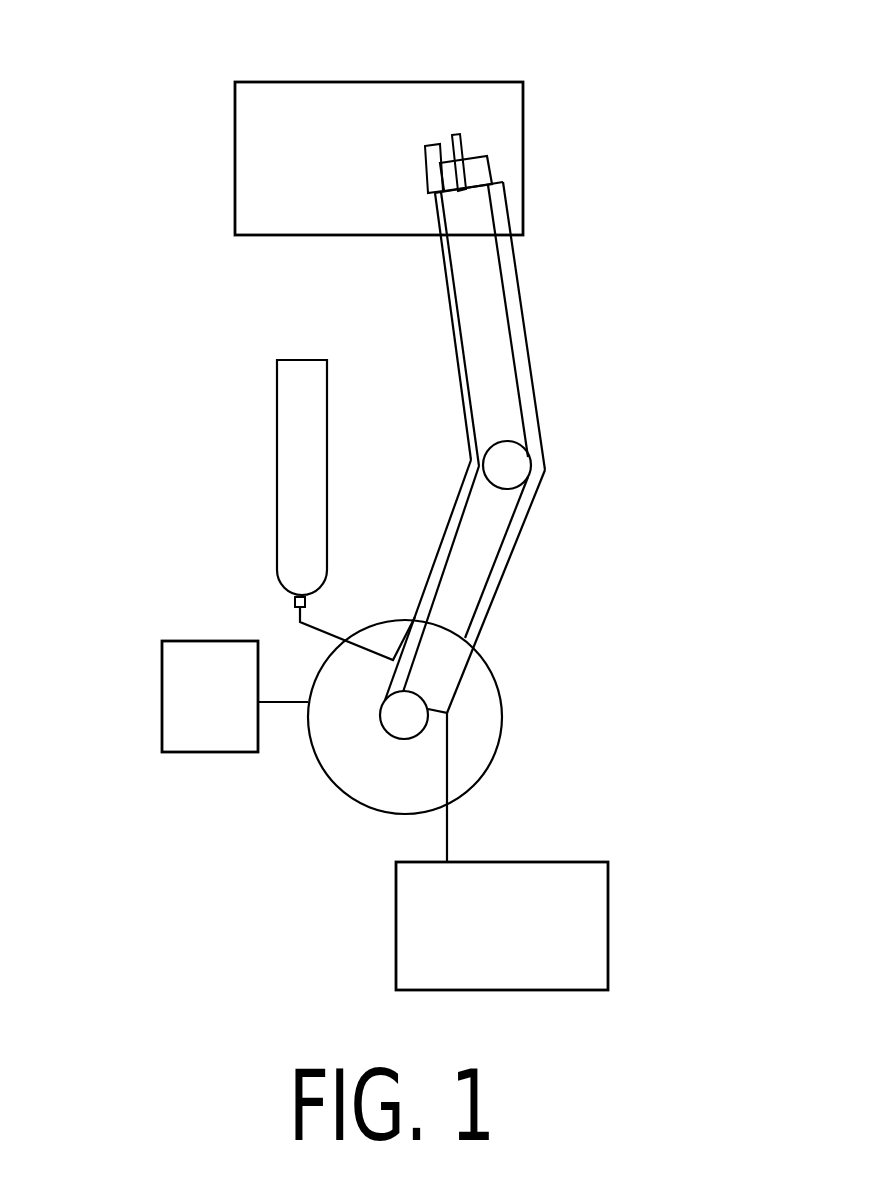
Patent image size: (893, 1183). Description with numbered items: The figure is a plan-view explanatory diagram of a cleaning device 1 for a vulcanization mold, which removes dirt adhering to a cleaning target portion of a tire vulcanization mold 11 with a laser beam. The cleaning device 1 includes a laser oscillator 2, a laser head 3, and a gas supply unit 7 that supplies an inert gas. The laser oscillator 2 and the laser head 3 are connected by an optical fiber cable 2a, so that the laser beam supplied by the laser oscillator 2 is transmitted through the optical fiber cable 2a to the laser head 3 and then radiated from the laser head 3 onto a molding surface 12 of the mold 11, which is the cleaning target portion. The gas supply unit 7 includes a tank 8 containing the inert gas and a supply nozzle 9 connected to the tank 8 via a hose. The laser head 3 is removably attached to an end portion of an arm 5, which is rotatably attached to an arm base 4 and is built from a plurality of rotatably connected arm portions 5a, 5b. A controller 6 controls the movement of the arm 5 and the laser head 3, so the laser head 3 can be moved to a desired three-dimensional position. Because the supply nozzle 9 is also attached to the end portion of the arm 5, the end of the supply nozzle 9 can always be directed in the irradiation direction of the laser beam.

The cleaning device 1 is at (568, 292).
The laser oscillator 2 is at (407, 920).
The optical fiber cable 2a is at (502, 583).
The laser head 3 is at (463, 148).
The arm base 4 is at (483, 730).
The arm 5 is at (633, 350).
The arm portion 5a is at (503, 352).
The arm portion 5b is at (503, 515).
The controller 6 is at (208, 655).
The gas supply unit 7 is at (389, 263).
The tank 8 is at (300, 362).
The supply nozzle 9 is at (428, 192).
The tire vulcanization mold 11 is at (237, 126).
The molding surface 12 is at (267, 222).